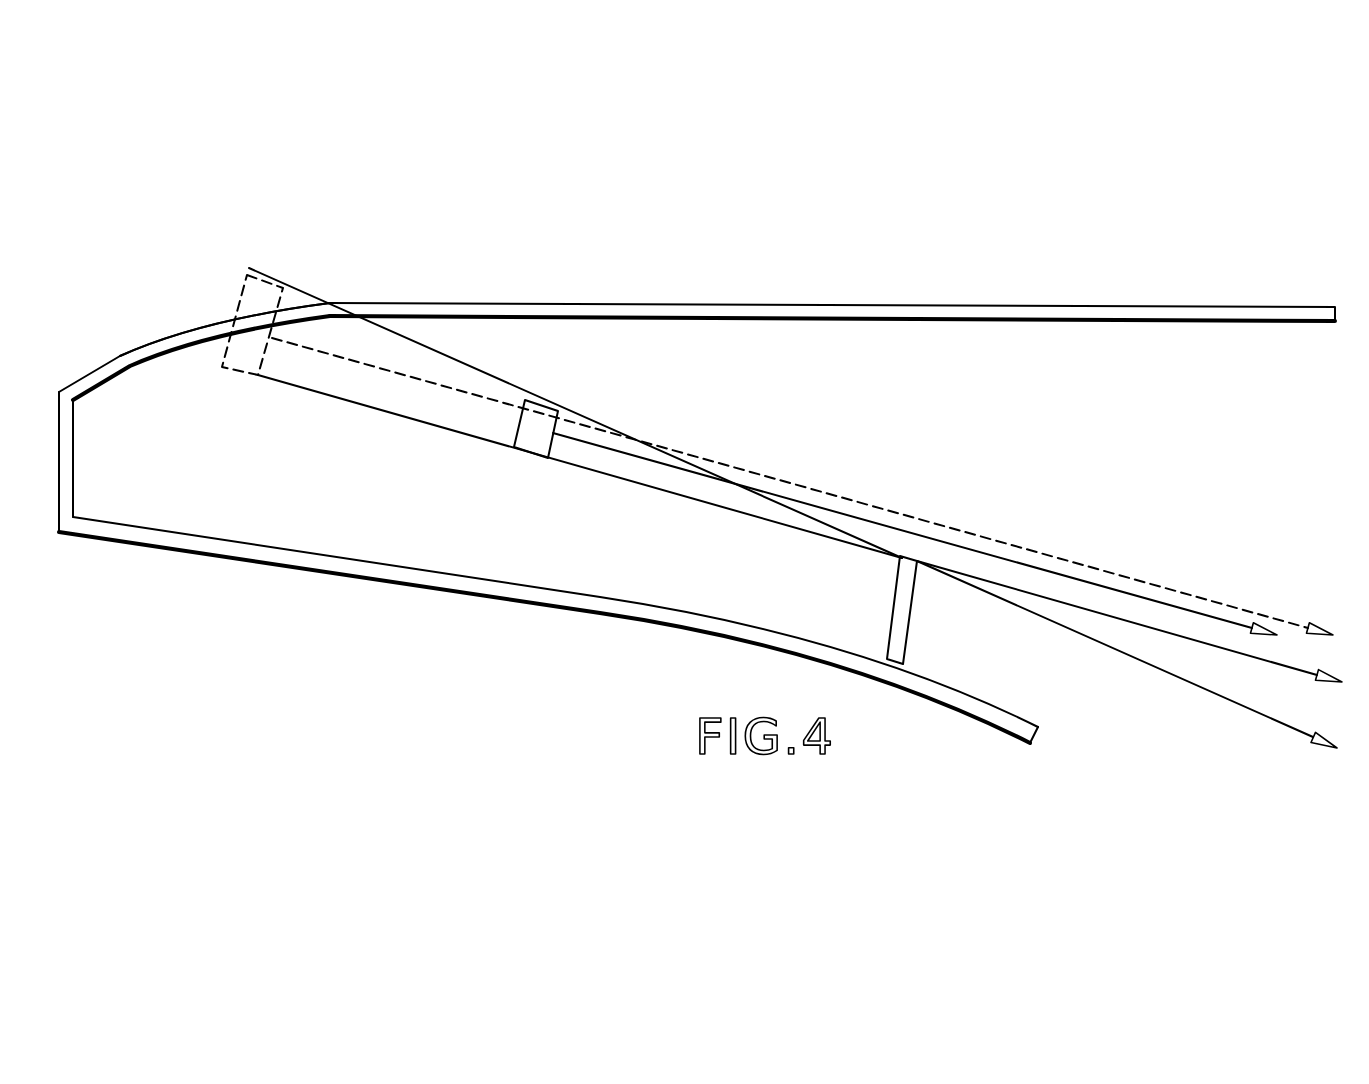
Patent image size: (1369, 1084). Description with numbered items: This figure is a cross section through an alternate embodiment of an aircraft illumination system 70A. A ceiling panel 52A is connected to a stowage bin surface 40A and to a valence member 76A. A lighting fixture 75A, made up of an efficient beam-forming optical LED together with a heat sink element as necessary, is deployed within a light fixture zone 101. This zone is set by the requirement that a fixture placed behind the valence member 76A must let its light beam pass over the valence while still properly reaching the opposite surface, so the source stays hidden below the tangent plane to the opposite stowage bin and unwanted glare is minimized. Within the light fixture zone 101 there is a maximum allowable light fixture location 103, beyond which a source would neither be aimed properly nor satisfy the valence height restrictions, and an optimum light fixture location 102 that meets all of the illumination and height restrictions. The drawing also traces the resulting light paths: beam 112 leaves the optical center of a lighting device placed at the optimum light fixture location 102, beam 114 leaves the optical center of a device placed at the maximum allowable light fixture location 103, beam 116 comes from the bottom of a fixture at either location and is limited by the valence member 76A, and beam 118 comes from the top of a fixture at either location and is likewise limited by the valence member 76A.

The stowage bin surface 40A is at (547, 590).
The ceiling panel 52A is at (967, 302).
The illumination system 70A is at (427, 653).
The lighting fixture 75A is at (543, 402).
The valence member 76A is at (910, 633).
The light fixture zone 101 is at (438, 440).
The optimum light fixture location 102 is at (178, 325).
The maximum allowable light fixture location 103 is at (501, 371).
The beam 112 is at (1018, 547).
The beam 114 is at (1165, 603).
The beam 116 is at (1273, 663).
The beam 118 is at (1177, 680).